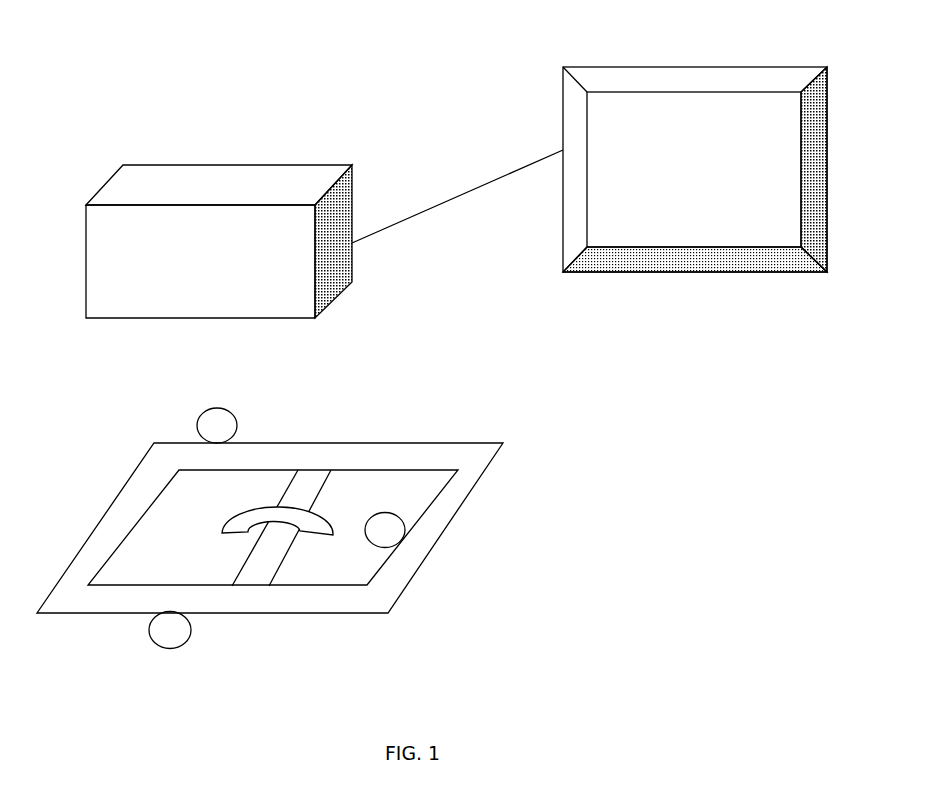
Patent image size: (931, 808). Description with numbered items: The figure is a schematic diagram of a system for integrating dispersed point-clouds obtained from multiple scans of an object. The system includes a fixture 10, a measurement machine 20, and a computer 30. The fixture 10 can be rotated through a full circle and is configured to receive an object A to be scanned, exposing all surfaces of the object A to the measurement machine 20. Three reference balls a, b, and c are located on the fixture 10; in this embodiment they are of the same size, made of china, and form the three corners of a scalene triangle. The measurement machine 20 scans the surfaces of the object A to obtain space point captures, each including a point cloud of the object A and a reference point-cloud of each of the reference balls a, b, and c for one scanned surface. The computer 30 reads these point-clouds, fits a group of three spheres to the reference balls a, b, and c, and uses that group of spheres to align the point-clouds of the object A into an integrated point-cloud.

The fixture 10 is at (322, 533).
The measurement machine 20 is at (207, 165).
The computer 30 is at (668, 67).
The reference ball a is at (237, 425).
The reference ball b is at (397, 518).
The reference ball c is at (188, 638).
The object A is at (240, 533).